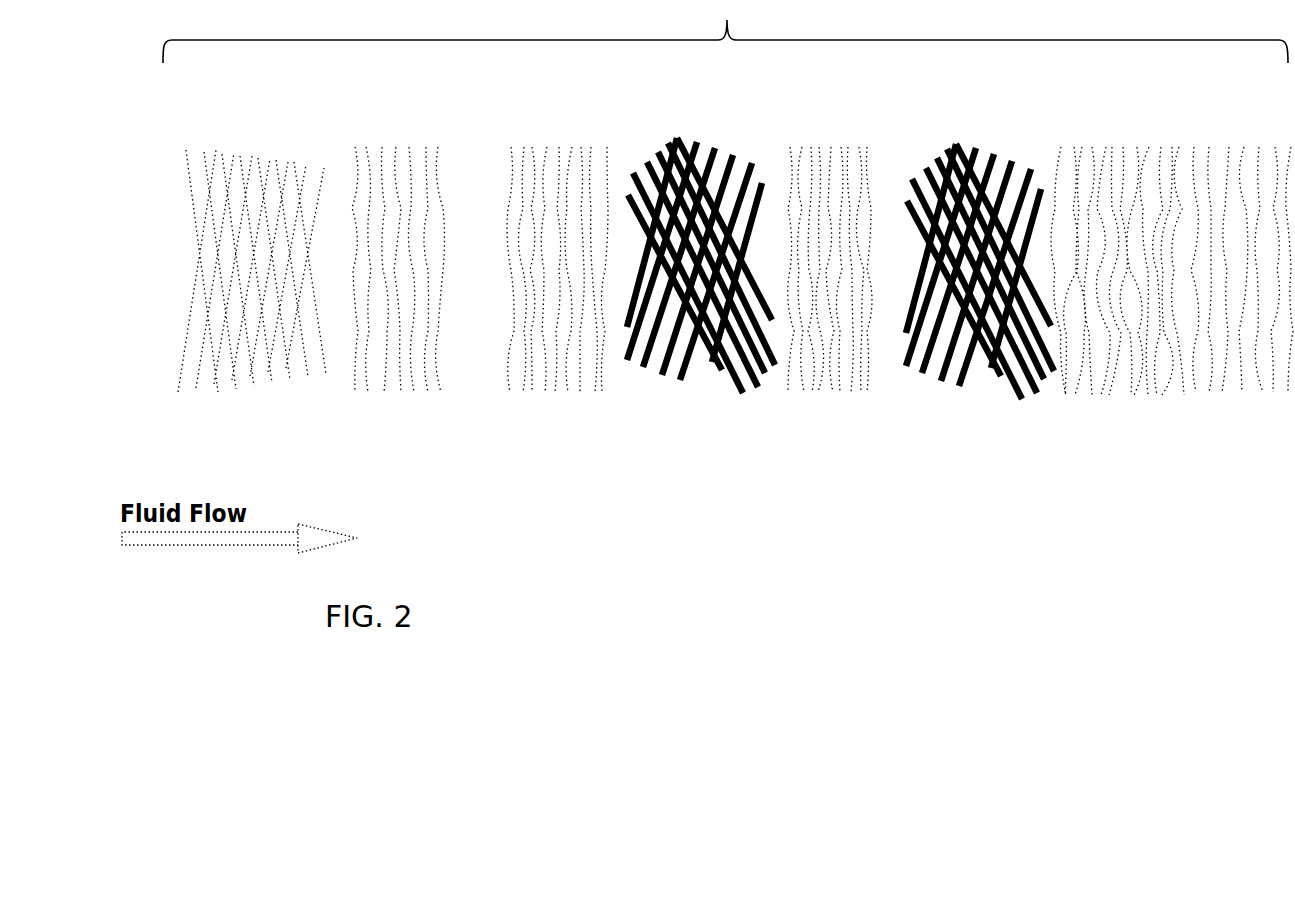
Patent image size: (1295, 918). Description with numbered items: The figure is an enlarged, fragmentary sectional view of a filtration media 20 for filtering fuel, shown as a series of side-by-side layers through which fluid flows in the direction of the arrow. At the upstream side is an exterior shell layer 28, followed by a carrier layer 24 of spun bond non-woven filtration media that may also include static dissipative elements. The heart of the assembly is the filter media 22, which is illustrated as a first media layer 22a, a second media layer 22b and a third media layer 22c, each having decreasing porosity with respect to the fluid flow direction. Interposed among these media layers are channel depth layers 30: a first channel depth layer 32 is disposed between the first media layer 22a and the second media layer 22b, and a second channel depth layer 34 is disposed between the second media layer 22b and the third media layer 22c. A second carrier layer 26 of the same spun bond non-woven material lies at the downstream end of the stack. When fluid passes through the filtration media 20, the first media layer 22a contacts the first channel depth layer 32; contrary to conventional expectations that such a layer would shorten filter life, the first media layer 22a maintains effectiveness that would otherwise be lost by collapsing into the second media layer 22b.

The filtration media 20 is at (702, 285).
The filter media 22 is at (1102, 423).
The first media layer 22a is at (562, 412).
The second media layer 22b is at (837, 412).
The third media layer 22c is at (1092, 415).
The carrier layer 24 is at (397, 412).
The carrier layer 26 is at (1240, 397).
The exterior shell layer 28 is at (195, 388).
The channel depth layers 30 is at (918, 130).
The first channel depth layer 32 is at (702, 125).
The second channel depth layer 34 is at (960, 125).